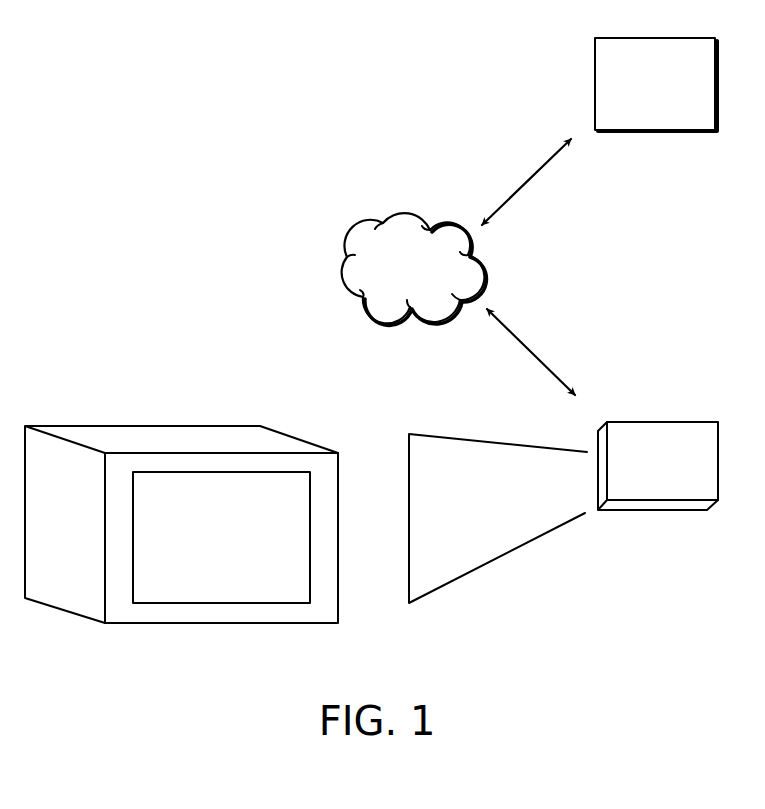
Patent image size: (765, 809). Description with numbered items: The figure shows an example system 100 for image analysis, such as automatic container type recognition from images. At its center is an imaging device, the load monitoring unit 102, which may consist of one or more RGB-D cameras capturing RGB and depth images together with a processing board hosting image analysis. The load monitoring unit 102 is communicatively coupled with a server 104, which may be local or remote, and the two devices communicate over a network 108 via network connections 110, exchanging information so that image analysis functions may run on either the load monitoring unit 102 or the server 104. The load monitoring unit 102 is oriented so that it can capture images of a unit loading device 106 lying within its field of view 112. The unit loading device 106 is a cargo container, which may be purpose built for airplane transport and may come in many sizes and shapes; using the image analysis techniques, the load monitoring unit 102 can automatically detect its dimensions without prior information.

The system 100 is at (172, 202).
The load monitoring unit 102 is at (638, 477).
The server 104 is at (630, 98).
The unit loading device 106 is at (198, 552).
The network 108 is at (383, 283).
The network connections 110 is at (523, 182).
The field of view 112 is at (497, 557).